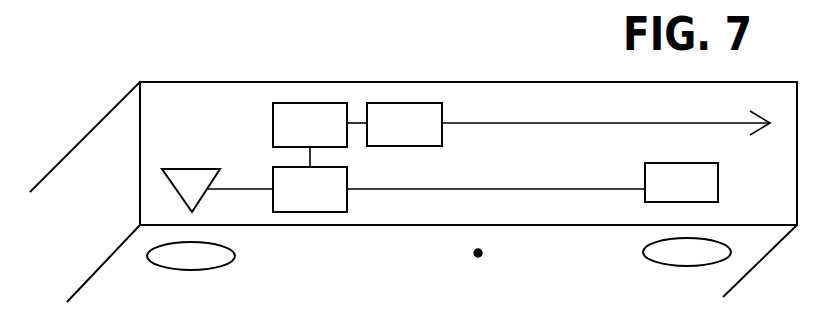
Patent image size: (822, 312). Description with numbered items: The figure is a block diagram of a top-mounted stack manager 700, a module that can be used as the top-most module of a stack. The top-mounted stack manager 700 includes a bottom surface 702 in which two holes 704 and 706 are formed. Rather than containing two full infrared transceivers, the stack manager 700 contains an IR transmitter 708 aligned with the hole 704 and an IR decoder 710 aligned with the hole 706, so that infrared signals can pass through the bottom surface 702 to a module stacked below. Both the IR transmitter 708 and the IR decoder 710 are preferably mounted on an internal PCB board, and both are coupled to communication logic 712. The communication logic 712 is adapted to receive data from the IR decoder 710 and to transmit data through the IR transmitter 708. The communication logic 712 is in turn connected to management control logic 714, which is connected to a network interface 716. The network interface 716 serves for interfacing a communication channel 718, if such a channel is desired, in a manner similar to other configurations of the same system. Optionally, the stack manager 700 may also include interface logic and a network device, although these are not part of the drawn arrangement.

The top-mounted stack manager 700 is at (317, 82).
The bottom surface 702 is at (476, 256).
The hole 704 is at (215, 270).
The hole 706 is at (650, 262).
The IR transmitter 708 is at (208, 168).
The IR decoder 710 is at (705, 194).
The communication logic 712 is at (334, 204).
The management control logic 714 is at (334, 137).
The network interface 716 is at (427, 137).
The communication channel 718 is at (565, 124).